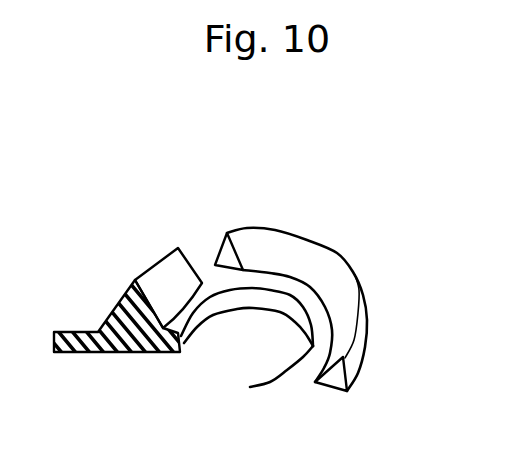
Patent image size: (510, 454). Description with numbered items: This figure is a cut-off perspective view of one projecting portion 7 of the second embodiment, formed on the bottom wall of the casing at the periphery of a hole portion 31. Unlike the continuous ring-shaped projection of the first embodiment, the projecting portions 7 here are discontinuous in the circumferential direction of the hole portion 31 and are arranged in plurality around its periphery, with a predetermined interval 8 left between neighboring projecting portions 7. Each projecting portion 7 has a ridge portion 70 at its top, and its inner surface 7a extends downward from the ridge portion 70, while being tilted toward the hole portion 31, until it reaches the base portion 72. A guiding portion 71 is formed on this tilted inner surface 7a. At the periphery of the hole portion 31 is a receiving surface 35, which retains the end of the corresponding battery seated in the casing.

The projecting portion 7 is at (302, 266).
The inner surface 7a is at (298, 257).
The predetermined interval 8 is at (204, 257).
The hole portion 31 is at (285, 310).
The receiving surface 35 is at (180, 313).
The ridge portion 70 is at (333, 340).
The guiding portion 71 is at (338, 292).
The base portion 72 is at (330, 342).